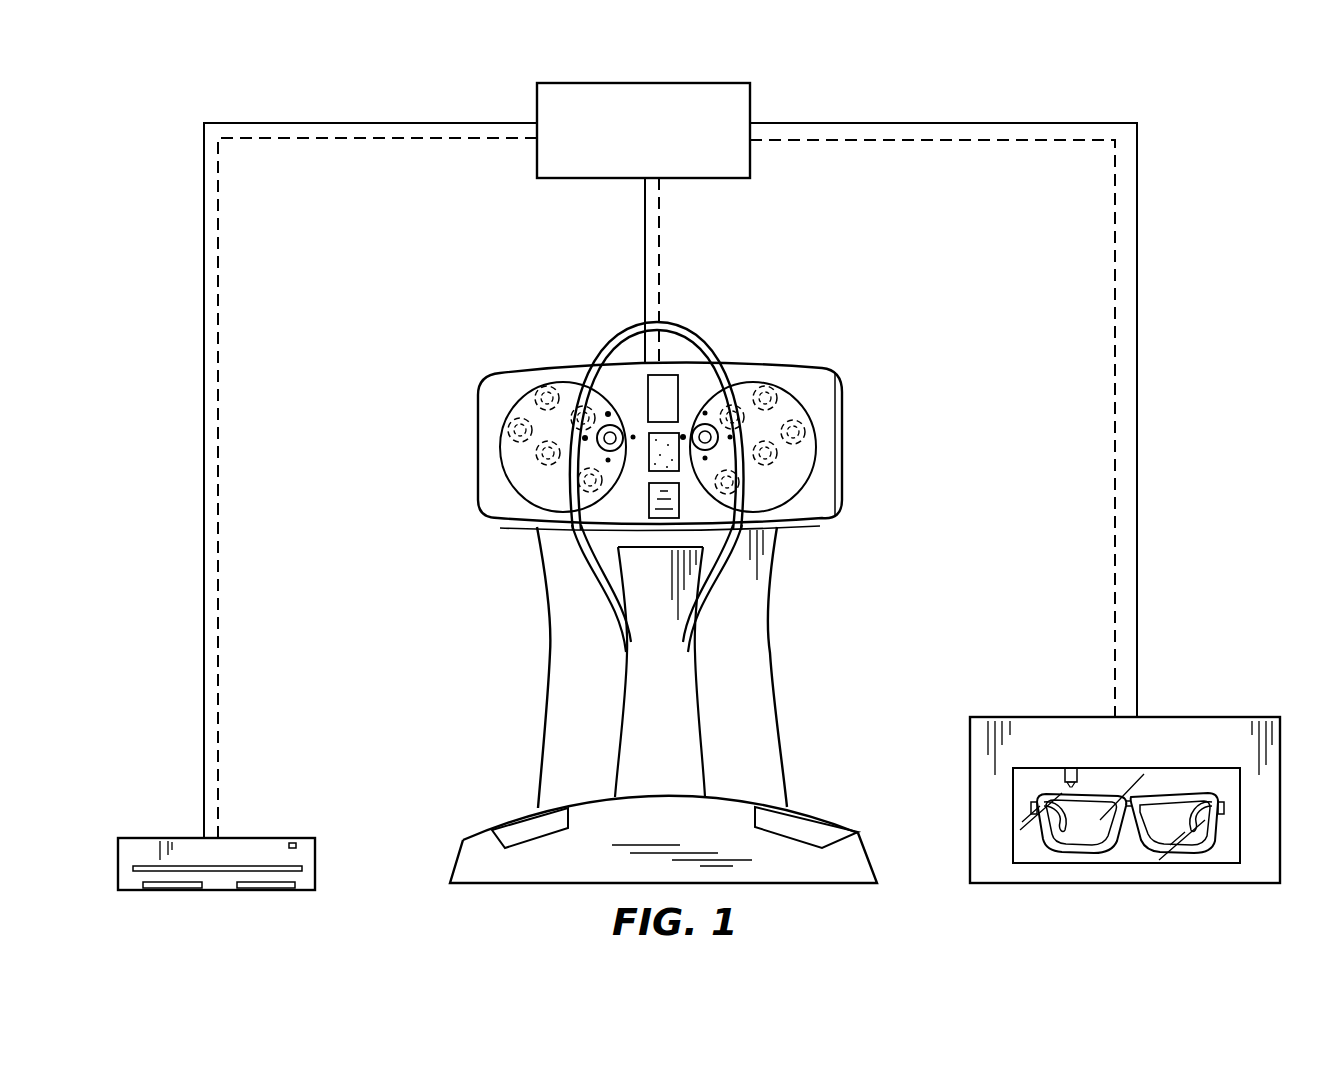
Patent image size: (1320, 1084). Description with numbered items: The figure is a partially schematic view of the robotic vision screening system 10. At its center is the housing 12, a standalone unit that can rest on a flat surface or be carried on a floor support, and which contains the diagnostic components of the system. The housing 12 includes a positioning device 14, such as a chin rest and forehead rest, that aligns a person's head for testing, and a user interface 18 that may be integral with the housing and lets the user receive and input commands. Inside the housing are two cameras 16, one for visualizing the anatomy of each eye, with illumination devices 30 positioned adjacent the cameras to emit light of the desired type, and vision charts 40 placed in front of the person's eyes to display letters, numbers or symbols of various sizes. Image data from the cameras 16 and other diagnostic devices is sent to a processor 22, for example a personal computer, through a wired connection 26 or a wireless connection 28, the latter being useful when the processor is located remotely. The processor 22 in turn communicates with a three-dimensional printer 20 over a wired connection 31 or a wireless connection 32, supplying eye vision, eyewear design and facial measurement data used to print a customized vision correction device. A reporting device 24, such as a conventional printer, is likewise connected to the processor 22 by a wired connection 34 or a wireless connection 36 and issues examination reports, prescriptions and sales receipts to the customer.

The robotic vision screening system 10 is at (920, 112).
The housing 12 is at (758, 745).
The positioning device 14 is at (648, 719).
The camera 16 is at (705, 440).
The user interface 18 is at (805, 824).
The 3D printer 20 is at (1158, 716).
The processor 22 is at (727, 104).
The reporting device 24 is at (245, 838).
The wired connection 26 is at (645, 290).
The wireless connection 28 is at (660, 292).
The illumination device 30 is at (585, 438).
The wired connection 31 is at (1137, 542).
The wireless connection 32 is at (1113, 510).
The wired connection 34 is at (204, 748).
The wireless connection 36 is at (220, 777).
The vision chart 40 is at (683, 435).